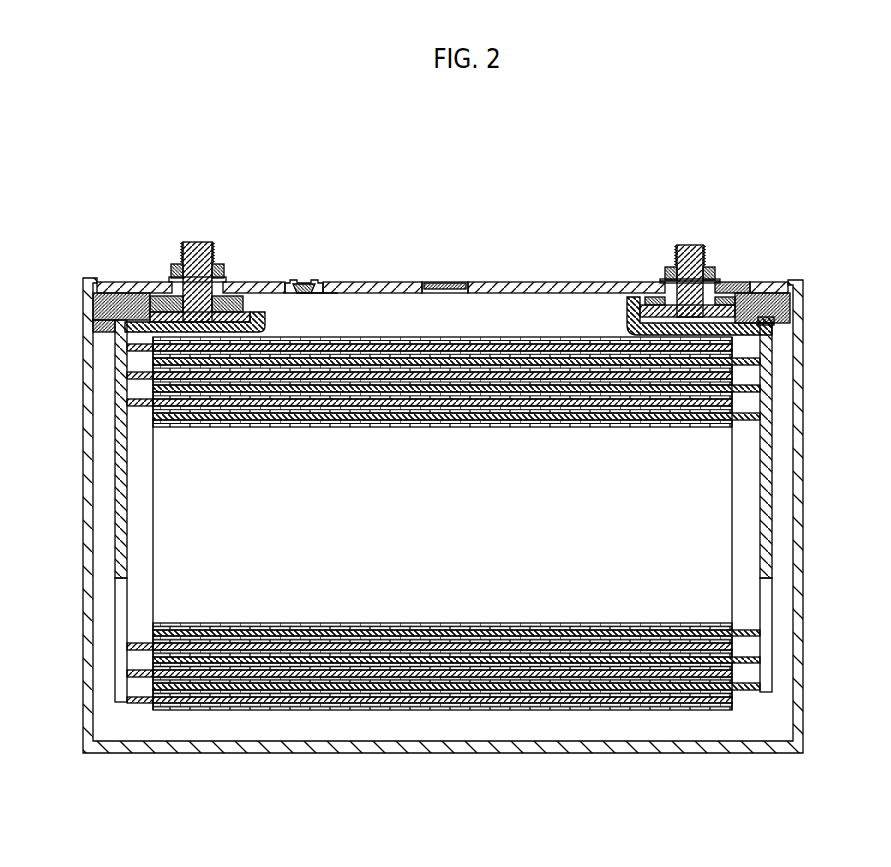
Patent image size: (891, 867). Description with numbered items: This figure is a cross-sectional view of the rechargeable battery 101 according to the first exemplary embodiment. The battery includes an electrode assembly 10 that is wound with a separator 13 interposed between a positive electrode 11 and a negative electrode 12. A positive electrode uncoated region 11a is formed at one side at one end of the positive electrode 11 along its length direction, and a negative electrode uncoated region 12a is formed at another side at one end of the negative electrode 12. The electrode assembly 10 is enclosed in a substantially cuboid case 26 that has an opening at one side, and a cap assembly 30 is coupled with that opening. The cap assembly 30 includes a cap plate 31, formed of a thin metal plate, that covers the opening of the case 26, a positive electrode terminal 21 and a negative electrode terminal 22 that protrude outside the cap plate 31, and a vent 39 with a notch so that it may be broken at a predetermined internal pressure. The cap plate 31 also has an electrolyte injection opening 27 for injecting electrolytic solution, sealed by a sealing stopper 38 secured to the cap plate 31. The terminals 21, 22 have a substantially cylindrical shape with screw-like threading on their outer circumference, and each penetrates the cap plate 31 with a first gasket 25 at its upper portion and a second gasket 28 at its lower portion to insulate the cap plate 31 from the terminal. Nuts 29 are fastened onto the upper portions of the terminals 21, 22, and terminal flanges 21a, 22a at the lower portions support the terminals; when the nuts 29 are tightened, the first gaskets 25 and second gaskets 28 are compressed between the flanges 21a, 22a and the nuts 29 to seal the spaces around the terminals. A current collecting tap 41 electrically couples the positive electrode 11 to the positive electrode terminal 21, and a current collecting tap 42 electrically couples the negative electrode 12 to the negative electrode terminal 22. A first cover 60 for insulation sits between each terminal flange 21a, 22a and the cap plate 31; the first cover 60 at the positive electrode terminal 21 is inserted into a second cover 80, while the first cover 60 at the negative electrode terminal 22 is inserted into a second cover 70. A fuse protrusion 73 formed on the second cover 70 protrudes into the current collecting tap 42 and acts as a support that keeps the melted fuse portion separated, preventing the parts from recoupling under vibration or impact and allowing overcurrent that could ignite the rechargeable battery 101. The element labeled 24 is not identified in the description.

The rechargeable battery 101 is at (458, 143).
The electrode assembly 10 is at (443, 579).
The positive electrode 11 is at (260, 703).
The positive electrode uncoated region 11a is at (130, 702).
The negative electrode 12 is at (313, 690).
The negative electrode uncoated region 12a is at (750, 692).
The separator 13 is at (443, 680).
The positive electrode terminal 21 is at (198, 242).
The terminal flange 21a is at (235, 298).
The negative electrode terminal 22 is at (690, 245).
The terminal flange 22a is at (648, 297).
The connecting member 24 is at (663, 281).
The first gasket 25 is at (717, 286).
The case 26 is at (797, 448).
The electrolyte injection opening 27 is at (303, 277).
The second gasket 28 is at (158, 284).
The nut 29 is at (178, 283).
The cap assembly 30 is at (442, 255).
The cap plate 31 is at (511, 282).
The sealing stopper 38 is at (302, 280).
The vent 39 is at (459, 283).
The current collecting tap 41 is at (121, 487).
The current collecting tap 42 is at (766, 512).
The first cover 60 is at (100, 300).
The second cover 70 is at (628, 310).
The fuse protrusion 73 is at (776, 323).
The second cover 80 is at (262, 306).